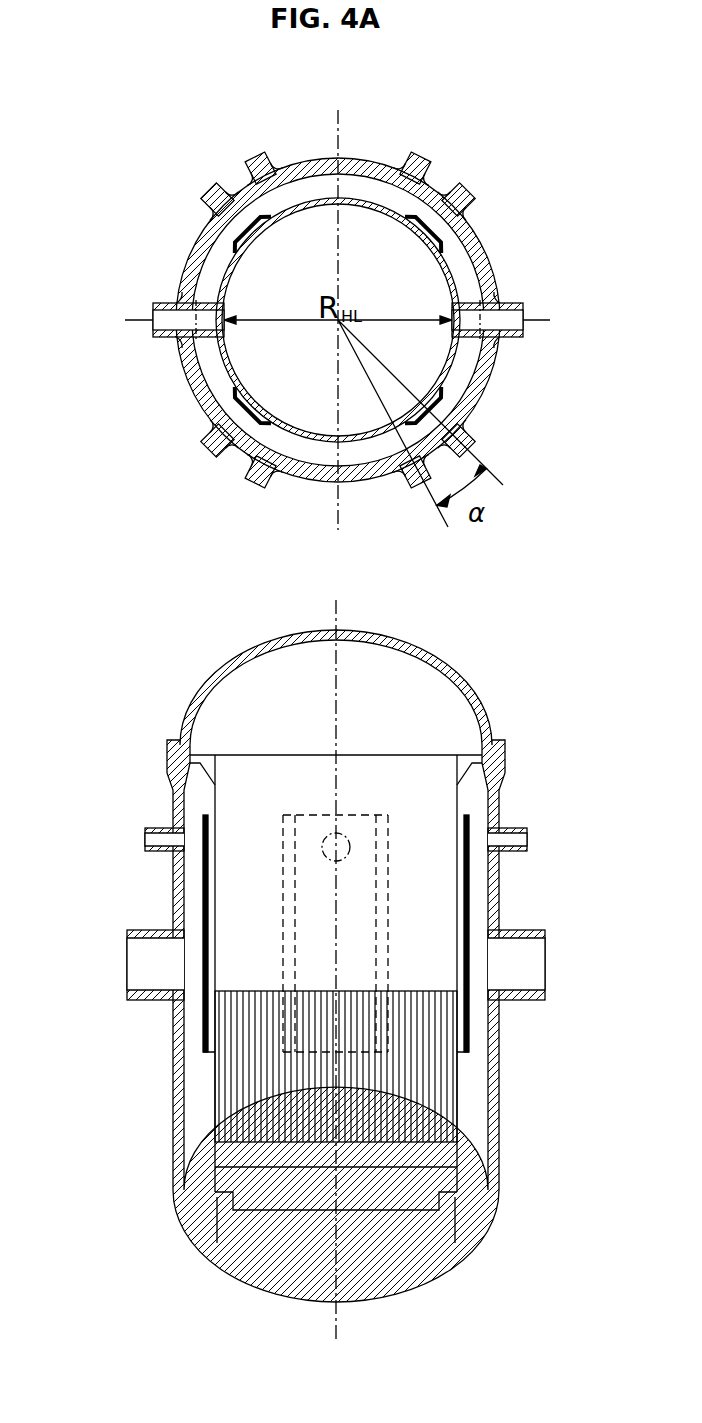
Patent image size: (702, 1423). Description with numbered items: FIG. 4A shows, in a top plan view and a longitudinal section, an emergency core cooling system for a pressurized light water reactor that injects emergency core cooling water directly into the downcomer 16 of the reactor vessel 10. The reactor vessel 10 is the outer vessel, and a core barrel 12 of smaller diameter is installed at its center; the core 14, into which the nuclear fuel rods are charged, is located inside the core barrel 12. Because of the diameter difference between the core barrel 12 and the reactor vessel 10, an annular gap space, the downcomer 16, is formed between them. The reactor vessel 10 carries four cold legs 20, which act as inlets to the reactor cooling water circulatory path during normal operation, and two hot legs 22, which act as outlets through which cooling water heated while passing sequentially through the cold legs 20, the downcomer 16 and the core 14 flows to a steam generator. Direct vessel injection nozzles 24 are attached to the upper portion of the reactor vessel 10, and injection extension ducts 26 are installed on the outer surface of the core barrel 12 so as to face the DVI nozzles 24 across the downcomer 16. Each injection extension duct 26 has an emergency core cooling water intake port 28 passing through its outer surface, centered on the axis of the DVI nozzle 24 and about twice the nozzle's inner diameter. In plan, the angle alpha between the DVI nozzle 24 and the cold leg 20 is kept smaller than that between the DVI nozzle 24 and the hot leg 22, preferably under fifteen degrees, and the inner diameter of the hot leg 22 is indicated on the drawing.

The reactor vessel 10 is at (486, 243).
The core barrel 12 is at (357, 443).
The core 14 is at (432, 1068).
The downcomer 16 is at (462, 382).
The cold leg 20 is at (258, 488).
The hot leg 22 is at (160, 303).
The direct vessel injection (DVI) nozzle 24 is at (212, 193).
The injection extension duct 26 is at (233, 393).
The emergency core cooling water intake port 28 is at (243, 414).